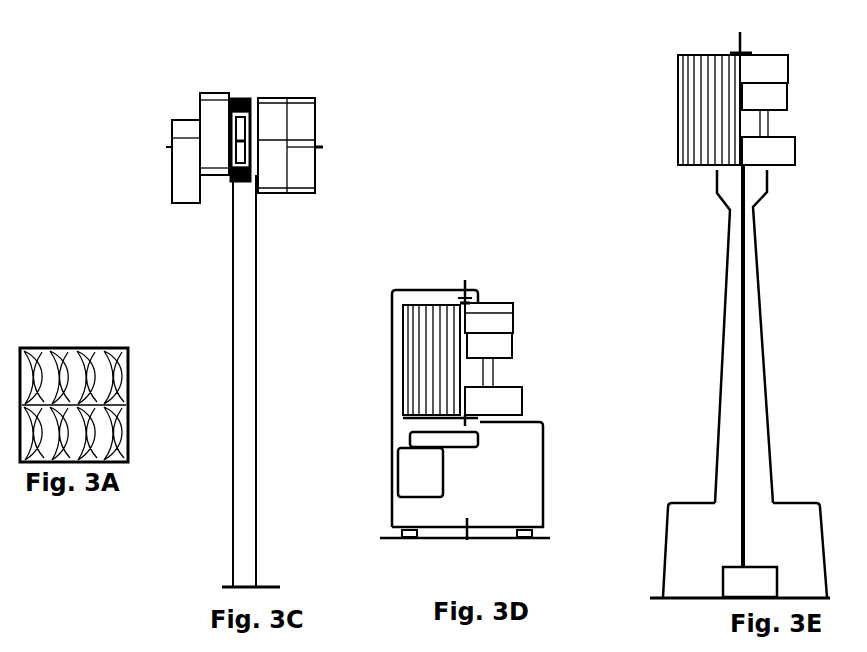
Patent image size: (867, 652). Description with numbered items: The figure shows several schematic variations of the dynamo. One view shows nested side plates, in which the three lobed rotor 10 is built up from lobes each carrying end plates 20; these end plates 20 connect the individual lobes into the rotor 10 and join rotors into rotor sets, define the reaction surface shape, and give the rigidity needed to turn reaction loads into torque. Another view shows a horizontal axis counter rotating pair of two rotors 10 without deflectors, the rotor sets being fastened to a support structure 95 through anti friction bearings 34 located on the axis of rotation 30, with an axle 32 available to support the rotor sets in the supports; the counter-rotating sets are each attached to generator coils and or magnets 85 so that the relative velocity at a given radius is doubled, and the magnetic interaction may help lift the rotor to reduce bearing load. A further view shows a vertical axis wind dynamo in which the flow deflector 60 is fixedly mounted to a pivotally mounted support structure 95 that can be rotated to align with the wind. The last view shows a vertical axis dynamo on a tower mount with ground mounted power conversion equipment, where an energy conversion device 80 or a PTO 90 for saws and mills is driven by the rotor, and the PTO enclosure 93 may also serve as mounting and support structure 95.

In FIG. 3C, the three lobed rotor 10 is at (185, 120).
In FIG. 3D, the three lobed rotor 10 is at (497, 303).
In FIG. 3E, the three lobed rotor 10 is at (780, 166).
In FIG. 3A, the end plate 20 is at (102, 360).
In FIG. 3C, the axis of rotation 30 is at (325, 143).
In FIG. 3D, the axis of rotation 30 is at (470, 545).
In FIG. 3D, the axle 32 is at (467, 280).
In FIG. 3C, the anti friction bearing 34 is at (282, 100).
In FIG. 3D, the anti friction bearing 34 is at (407, 543).
In FIG. 3E, the anti friction bearing 34 is at (730, 53).
In FIG. 3D, the flow deflector 60 is at (425, 305).
In FIG. 3E, the flow deflector 60 is at (678, 160).
In FIG. 3E, the energy conversion device 80 is at (757, 575).
In FIG. 3C, the generator coils and or magnets 85 is at (240, 100).
In FIG. 3D, the PTO 90 is at (410, 432).
In FIG. 3E, the PTO 90 is at (743, 537).
In FIG. 3D, the PTO enclosure 93 is at (527, 437).
In FIG. 3E, the PTO enclosure 93 is at (692, 527).
In FIG. 3C, the support structure 95 is at (240, 248).
In FIG. 3D, the support structure 95 is at (442, 290).
In FIG. 3E, the support structure 95 is at (758, 357).